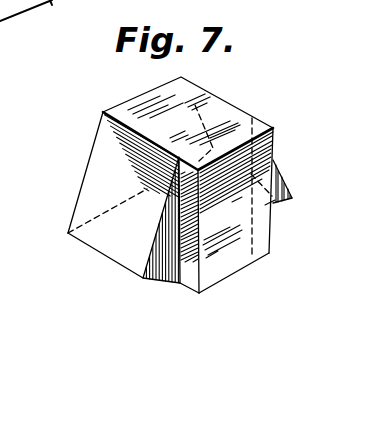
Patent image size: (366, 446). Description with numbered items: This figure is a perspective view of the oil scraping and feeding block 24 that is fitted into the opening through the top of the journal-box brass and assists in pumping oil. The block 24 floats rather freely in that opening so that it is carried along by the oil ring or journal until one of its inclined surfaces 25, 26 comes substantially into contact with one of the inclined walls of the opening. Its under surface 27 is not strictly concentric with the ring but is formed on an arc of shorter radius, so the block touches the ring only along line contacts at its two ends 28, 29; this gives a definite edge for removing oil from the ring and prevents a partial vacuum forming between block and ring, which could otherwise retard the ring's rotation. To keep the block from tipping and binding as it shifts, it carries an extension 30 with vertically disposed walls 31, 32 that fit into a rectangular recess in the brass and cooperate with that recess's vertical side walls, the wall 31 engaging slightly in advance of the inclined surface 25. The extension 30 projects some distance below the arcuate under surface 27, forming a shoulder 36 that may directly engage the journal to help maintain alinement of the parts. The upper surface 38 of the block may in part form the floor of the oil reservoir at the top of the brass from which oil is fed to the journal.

The oil scraping and feeding block 24 is at (118, 107).
The inclined surface 25 is at (276, 172).
The inclined surface 26 is at (93, 188).
The under surface 27 is at (168, 268).
The end of the block 28 is at (124, 269).
The end of the block 29 is at (281, 178).
The extension 30 is at (238, 237).
The vertically disposed wall 31 is at (271, 240).
The vertically disposed wall 32 is at (193, 285).
The shoulder 36 is at (176, 285).
The upper surface 38 is at (223, 112).